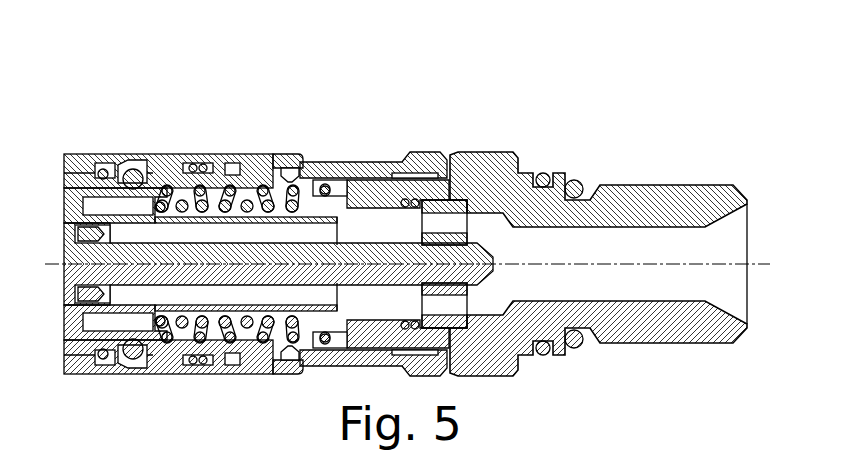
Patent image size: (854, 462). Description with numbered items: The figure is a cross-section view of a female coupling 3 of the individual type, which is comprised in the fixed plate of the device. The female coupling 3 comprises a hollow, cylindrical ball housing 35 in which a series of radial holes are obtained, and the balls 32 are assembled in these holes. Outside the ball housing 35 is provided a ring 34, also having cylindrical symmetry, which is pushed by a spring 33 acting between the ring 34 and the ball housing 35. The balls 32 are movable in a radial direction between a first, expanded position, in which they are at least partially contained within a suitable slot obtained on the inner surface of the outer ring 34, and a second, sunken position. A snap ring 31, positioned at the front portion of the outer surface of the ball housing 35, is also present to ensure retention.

The female coupling 3 is at (486, 150).
The snap ring 31 is at (106, 160).
The balls 32 is at (139, 160).
The spring 33 is at (199, 158).
The ring 34 is at (249, 149).
The ball housing 35 is at (354, 160).